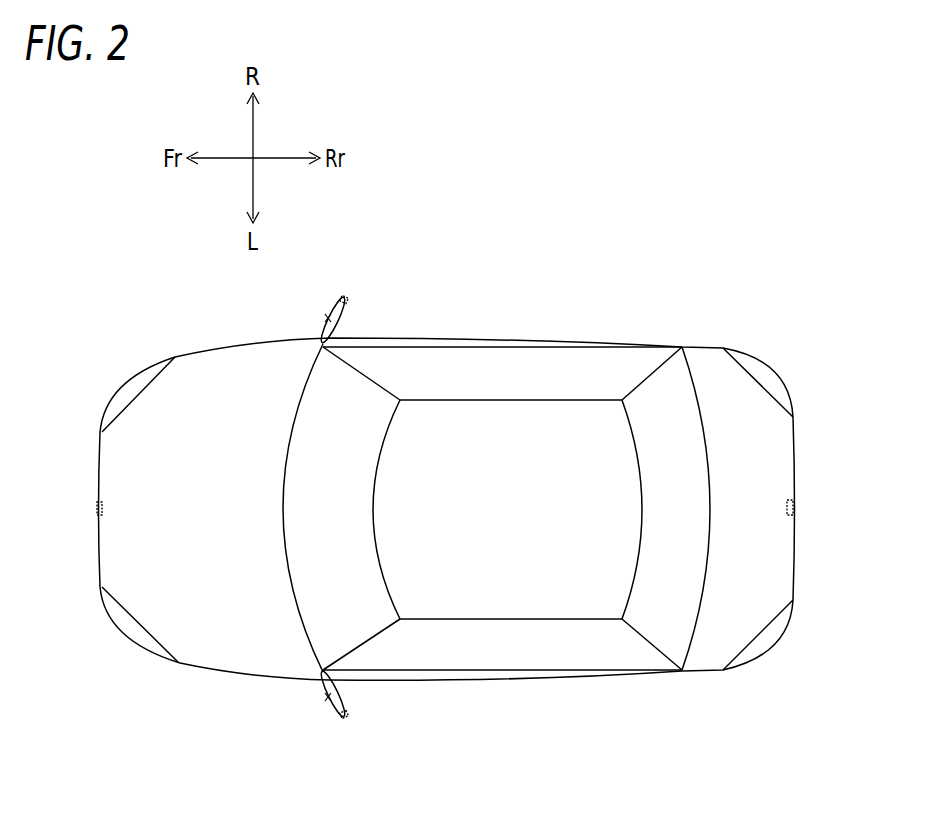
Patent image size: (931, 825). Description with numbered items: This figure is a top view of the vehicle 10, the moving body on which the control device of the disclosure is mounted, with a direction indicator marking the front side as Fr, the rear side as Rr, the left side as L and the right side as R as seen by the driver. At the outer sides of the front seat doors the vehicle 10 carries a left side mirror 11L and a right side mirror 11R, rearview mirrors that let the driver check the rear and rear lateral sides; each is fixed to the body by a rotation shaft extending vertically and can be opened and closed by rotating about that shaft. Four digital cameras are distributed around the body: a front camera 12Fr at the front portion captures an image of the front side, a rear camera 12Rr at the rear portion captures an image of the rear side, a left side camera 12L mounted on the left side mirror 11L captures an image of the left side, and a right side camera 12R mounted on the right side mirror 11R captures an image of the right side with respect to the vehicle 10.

The vehicle 10 is at (597, 338).
The right side mirror 11R is at (322, 340).
The left side mirror 11L is at (322, 673).
The right side camera 12R is at (347, 298).
The left side camera 12L is at (347, 714).
The front camera 12Fr is at (97, 508).
The rear camera 12Rr is at (795, 508).